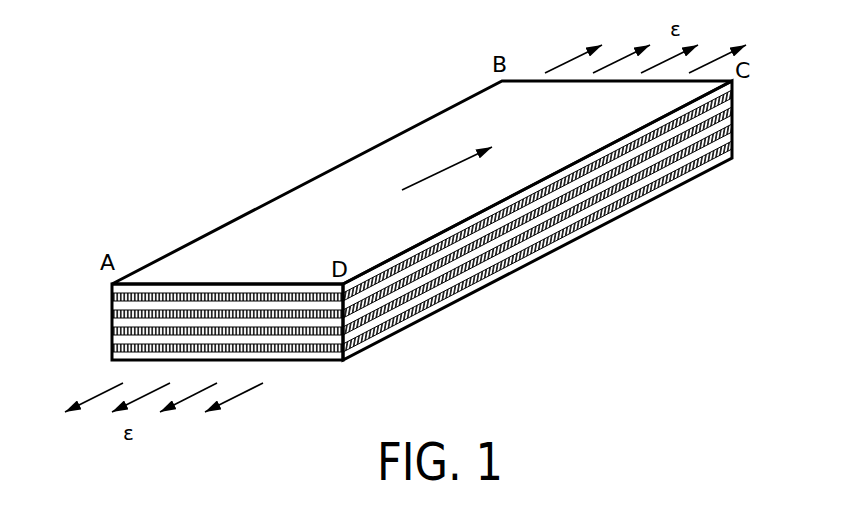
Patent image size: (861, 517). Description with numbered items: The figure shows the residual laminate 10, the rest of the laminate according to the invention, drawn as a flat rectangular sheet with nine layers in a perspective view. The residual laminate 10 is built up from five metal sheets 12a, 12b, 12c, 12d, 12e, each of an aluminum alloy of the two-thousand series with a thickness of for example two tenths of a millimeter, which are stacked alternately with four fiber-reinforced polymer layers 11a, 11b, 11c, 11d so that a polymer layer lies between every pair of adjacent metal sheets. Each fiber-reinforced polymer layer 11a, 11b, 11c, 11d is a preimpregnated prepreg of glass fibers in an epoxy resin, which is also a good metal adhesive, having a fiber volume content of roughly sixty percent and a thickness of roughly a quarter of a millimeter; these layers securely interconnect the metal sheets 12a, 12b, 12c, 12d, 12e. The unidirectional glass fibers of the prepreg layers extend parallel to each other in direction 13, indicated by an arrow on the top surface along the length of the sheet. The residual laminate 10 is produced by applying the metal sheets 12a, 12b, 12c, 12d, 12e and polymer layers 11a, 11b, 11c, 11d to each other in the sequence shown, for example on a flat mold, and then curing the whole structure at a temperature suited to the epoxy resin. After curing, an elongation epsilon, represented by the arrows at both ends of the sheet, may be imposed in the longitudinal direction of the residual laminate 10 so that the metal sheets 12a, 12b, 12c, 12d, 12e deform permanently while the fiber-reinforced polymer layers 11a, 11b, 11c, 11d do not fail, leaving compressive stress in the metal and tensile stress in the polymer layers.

The residual laminate 10 is at (250, 118).
The fiber-reinforced polymer layer 11a is at (733, 95).
The fiber-reinforced polymer layer 11b is at (733, 112).
The fiber-reinforced polymer layer 11c is at (733, 125).
The fiber-reinforced polymer layer 11d is at (733, 145).
The metal sheet 12a is at (112, 288).
The metal sheet 12b is at (112, 305).
The metal sheet 12c is at (112, 322).
The metal sheet 12d is at (112, 339).
The metal sheet 12e is at (112, 356).
The fiber direction 13 is at (447, 168).